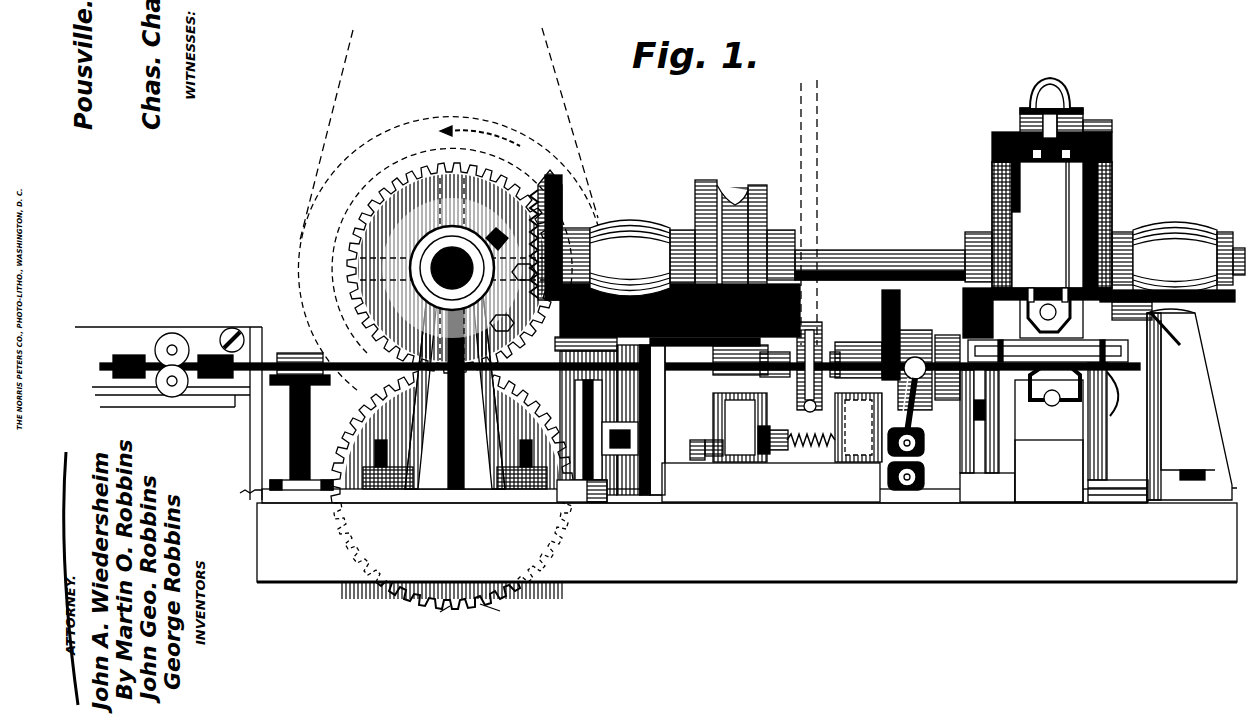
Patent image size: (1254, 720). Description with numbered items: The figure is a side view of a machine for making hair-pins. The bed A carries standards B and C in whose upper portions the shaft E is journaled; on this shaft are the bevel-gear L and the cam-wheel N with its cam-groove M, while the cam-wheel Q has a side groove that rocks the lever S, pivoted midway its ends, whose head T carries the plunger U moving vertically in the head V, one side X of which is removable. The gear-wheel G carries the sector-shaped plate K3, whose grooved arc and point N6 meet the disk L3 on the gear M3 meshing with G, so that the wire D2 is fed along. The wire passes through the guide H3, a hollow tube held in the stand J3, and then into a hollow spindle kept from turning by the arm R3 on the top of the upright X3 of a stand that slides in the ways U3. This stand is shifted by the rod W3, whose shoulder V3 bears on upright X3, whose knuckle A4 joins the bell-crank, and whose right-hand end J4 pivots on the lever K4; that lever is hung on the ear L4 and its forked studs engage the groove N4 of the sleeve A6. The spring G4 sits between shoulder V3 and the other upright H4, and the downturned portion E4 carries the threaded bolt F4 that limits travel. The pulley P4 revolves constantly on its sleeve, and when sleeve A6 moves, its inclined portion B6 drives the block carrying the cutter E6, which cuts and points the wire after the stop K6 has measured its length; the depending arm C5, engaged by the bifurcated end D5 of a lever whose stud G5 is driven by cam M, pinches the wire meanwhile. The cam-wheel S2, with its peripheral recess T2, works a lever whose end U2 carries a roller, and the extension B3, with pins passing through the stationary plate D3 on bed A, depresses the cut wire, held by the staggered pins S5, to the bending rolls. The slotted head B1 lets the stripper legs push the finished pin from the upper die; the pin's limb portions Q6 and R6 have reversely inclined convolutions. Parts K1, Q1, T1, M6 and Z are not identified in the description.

The bed A is at (738, 531).
The standards B is at (448, 446).
The standards C is at (902, 338).
The shaft E is at (890, 258).
The gear-wheel G is at (452, 268).
The bevel-gear L is at (565, 197).
The cam-groove M is at (740, 188).
The cam-wheel N is at (781, 226).
The rocking lever S is at (1050, 82).
The head of lever T is at (1075, 120).
The plunger U is at (1035, 122).
The head of arm V is at (1047, 225).
The side of head X is at (1078, 175).
The cam-wheel Q is at (1100, 216).
The cam-wheel S2 is at (995, 145).
The recess T2 is at (992, 216).
The pin K1 is at (1032, 290).
The pin Q1 is at (1060, 292).
The head B1 is at (1051, 320).
The point of sector N6 is at (512, 244).
The sector-shaped plate K3 is at (513, 297).
The wire D2 is at (602, 410).
The arm R3 is at (665, 338).
The staggered pins S5 is at (740, 360).
The limb portion of pin Q6 is at (775, 352).
The pulley P4 is at (818, 325).
The groove of sleeve N4 is at (915, 356).
The sleeve A6 is at (943, 335).
The horizontal lateral extension B3 is at (1045, 336).
The inclined portion B6 is at (1132, 317).
The limb portion of pin R6 is at (1170, 328).
The stop K6 is at (1163, 392).
The cutter E6 is at (1118, 432).
The lever M6 is at (1125, 401).
The pedestal Z is at (1010, 392).
The lever K4 is at (938, 422).
The right-hand end of rod J4 is at (918, 445).
The ear L4 is at (918, 479).
The pedestal T1 is at (1049, 433).
The end of lever U2 is at (1049, 471).
The upright portion of stand X3 is at (740, 427).
The vertical portion of stand H4 is at (858, 402).
The spring G4 is at (824, 450).
The shoulder V3 is at (770, 452).
The rod W3 is at (714, 455).
The ways U3 is at (771, 482).
The knuckle A4 is at (618, 472).
The downwardly-turned portion E4 is at (655, 470).
The threaded bolt F4 is at (672, 480).
The bifurcated end of lever D5 is at (700, 462).
The depending arm C5 is at (625, 480).
The stationary plate D3 is at (168, 413).
The stud G5 is at (205, 355).
The guide H3 is at (305, 355).
The stand J3 is at (292, 408).
The disk L3 is at (427, 619).
The gear M3 is at (503, 618).